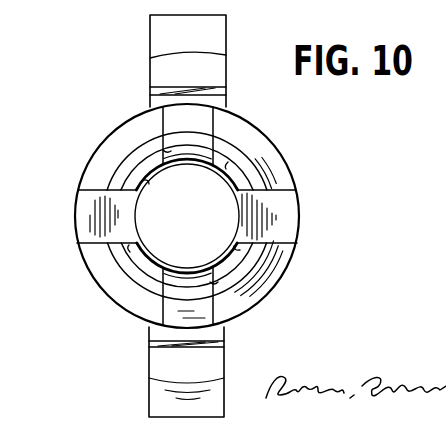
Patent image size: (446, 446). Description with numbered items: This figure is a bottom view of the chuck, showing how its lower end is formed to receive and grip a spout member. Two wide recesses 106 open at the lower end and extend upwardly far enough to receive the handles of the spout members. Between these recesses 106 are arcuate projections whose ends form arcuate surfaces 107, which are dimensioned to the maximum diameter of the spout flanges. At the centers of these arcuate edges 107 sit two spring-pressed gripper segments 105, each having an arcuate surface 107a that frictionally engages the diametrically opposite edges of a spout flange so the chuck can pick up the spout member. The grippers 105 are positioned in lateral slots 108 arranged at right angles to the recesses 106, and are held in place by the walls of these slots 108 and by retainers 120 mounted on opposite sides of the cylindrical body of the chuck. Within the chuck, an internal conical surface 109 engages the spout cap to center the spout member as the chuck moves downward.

The spring-pressed gripper segment 105 is at (173, 176).
The recess 106 is at (91, 191).
The arcuate surface 107 is at (228, 162).
The arcuate surface of gripper segment 107a is at (163, 150).
The lateral slot 108 is at (211, 118).
The internal conical surface 109 is at (143, 180).
The retainer 120 is at (219, 37).